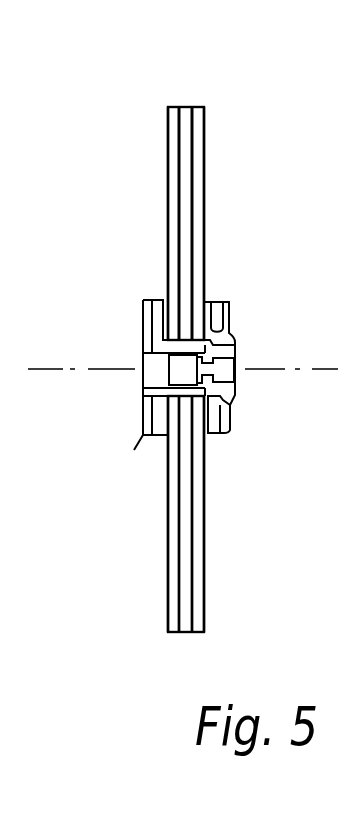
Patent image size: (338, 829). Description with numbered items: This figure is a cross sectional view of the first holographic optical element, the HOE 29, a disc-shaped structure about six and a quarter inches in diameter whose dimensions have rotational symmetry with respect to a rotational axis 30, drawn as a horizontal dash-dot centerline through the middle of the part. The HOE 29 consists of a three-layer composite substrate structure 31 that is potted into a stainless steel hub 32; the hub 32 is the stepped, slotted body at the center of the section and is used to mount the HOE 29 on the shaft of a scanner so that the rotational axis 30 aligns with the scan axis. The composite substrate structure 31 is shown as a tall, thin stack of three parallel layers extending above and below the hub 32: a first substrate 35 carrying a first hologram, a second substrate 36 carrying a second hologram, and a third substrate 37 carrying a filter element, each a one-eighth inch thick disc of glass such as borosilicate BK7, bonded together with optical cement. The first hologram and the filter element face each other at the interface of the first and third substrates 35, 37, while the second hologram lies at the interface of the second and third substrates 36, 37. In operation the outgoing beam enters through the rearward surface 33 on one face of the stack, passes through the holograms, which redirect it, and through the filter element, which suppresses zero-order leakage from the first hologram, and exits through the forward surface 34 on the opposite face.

The HOE 29 is at (96, 156).
The rotational axis 30 is at (49, 368).
The three-layer composite substrate structure 31 is at (163, 637).
The stainless steel hub 32 is at (134, 450).
The rearward surface 33 is at (168, 583).
The forward surface 34 is at (204, 590).
The first substrate 35 is at (173, 107).
The second substrate 36 is at (198, 107).
The third substrate 37 is at (185, 107).